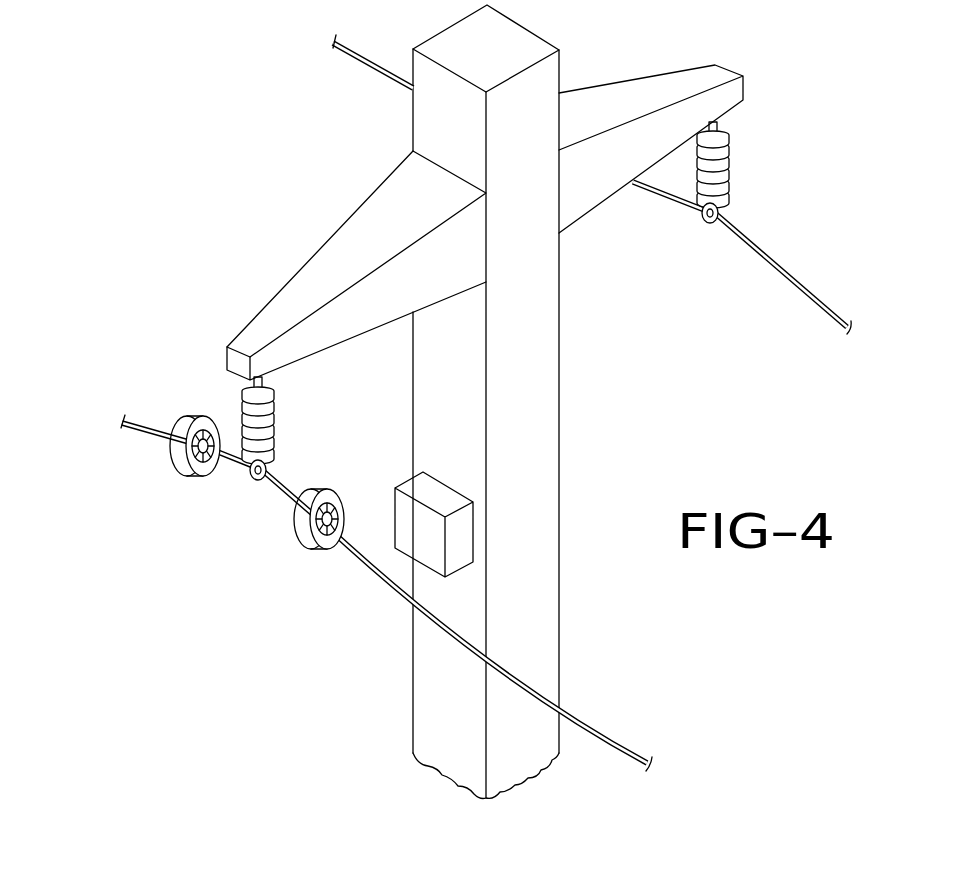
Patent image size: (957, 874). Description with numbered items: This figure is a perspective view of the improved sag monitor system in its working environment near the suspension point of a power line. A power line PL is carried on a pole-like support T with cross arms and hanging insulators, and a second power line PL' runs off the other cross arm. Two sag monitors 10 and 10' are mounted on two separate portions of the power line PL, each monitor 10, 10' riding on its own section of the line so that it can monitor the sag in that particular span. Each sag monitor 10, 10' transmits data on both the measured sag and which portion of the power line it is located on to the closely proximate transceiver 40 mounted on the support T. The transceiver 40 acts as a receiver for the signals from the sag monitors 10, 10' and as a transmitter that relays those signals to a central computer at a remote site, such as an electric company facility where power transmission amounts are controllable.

The utility pole / tower T is at (547, 358).
The power line PL is at (379, 593).
The second power line PL' is at (606, 184).
The sag monitor 10 is at (282, 556).
The sag monitor 10' is at (157, 482).
The transceiver 40 is at (463, 540).